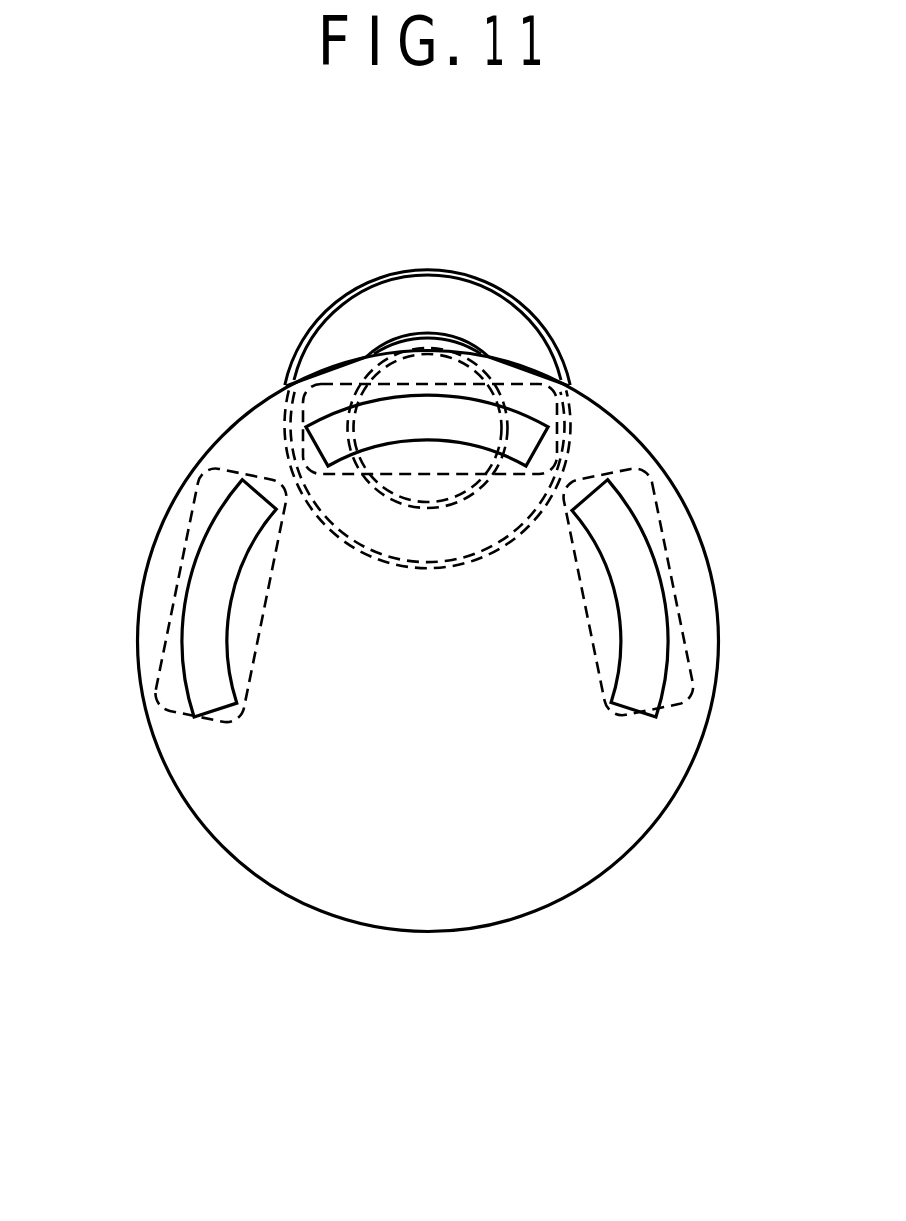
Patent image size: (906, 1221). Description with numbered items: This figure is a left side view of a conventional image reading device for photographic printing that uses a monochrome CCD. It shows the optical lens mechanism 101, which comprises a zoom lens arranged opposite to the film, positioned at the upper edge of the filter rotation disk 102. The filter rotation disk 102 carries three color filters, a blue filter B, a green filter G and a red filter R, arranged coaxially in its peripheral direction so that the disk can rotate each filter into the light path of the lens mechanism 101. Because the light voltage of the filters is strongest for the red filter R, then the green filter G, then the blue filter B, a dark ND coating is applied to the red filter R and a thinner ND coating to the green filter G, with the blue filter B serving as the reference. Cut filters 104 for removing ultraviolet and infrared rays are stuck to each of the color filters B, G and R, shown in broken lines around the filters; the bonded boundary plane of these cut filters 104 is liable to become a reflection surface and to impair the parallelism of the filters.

The optical lens mechanism 101 is at (477, 307).
The filter rotation disk 102 is at (332, 860).
The cut filters 104 is at (537, 407).
The green filter G is at (370, 423).
The red filter R is at (202, 640).
The blue filter B is at (645, 643).